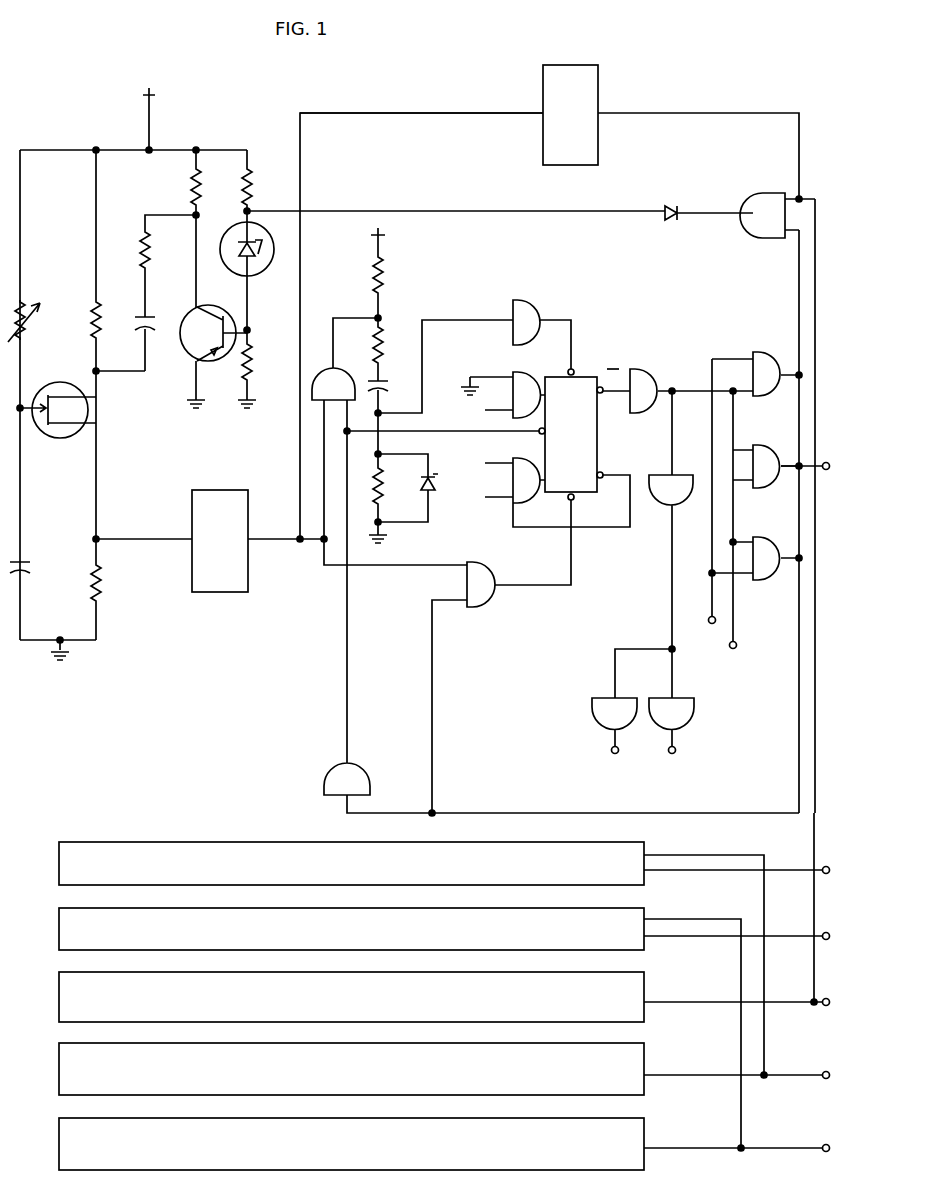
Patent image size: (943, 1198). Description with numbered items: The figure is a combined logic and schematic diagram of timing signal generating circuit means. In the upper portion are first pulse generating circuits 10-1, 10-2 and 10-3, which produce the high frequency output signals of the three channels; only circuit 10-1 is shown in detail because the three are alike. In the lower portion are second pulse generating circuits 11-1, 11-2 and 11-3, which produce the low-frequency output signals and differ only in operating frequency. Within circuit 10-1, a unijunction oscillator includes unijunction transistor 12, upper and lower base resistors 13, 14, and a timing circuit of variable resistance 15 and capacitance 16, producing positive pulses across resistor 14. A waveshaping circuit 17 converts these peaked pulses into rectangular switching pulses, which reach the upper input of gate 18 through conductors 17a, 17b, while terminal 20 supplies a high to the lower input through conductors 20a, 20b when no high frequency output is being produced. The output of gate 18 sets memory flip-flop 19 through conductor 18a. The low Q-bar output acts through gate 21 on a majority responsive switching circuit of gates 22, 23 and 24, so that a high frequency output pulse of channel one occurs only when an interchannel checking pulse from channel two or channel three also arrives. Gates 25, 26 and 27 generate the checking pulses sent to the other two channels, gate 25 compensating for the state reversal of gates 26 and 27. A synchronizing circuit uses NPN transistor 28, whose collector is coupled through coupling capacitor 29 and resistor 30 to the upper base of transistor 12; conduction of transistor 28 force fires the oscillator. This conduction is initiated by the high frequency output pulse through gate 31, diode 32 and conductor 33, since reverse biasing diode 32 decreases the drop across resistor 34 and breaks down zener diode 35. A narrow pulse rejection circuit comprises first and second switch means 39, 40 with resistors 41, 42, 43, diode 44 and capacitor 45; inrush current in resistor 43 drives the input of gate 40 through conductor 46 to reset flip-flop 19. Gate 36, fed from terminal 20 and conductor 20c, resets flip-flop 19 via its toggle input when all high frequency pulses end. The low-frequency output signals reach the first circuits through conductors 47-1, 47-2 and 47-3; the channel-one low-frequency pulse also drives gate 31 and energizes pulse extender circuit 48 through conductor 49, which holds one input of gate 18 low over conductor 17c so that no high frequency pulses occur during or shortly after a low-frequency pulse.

The first pulse generating circuit 10-1 is at (485, 248).
The first pulse generating circuit 10-2 is at (366, 876).
The first pulse generating circuit 10-3 is at (366, 941).
The second pulse generating circuit 11-1 is at (360, 1010).
The second pulse generating circuit 11-2 is at (364, 1082).
The second pulse generating circuit 11-3 is at (364, 1157).
The unijunction transistor 12 is at (58, 438).
The upper base resistor 13 is at (95, 312).
The lower base resistor 14 is at (99, 586).
The variable resistance 15 is at (22, 304).
The capacitance 16 is at (22, 565).
The waveshaping circuit 17 is at (249, 586).
The conductor 17a is at (288, 516).
The conductor 17b is at (378, 566).
The conductor 17c is at (405, 112).
The gate 18 is at (478, 563).
The conductor 18a is at (530, 584).
The memory flip-flop 19 is at (598, 458).
The terminal 20 is at (827, 460).
The conductor 20a is at (467, 813).
The conductor 20b is at (433, 728).
The conductor 20c is at (813, 288).
The gate 21 is at (638, 369).
The gate 22 is at (760, 351).
The gate 23 is at (760, 445).
The gate 24 is at (762, 537).
The gate 25 is at (660, 506).
The gate 26 is at (598, 697).
The gate 27 is at (678, 697).
The NPN transistor 28 is at (222, 357).
The coupling capacitor 29 is at (143, 330).
The resistor 30 is at (150, 253).
The gate 31 is at (762, 192).
The diode 32 is at (665, 207).
The conductor 33 is at (414, 211).
The resistor 34 is at (250, 180).
The zener diode 35 is at (244, 214).
The gate 36 is at (352, 764).
The first switch means 39 is at (338, 368).
The second switch means 40 is at (538, 310).
The resistor 41 is at (383, 277).
The resistor 42 is at (383, 345).
The resistor 43 is at (381, 503).
The diode 44 is at (436, 484).
The capacitor 45 is at (385, 390).
The conductor 46 is at (445, 320).
The conductor 47-1 is at (816, 912).
The conductor 47-2 is at (763, 902).
The conductor 47-3 is at (740, 1052).
The pulse extender circuit 48 is at (600, 86).
The conductor 49 is at (713, 113).